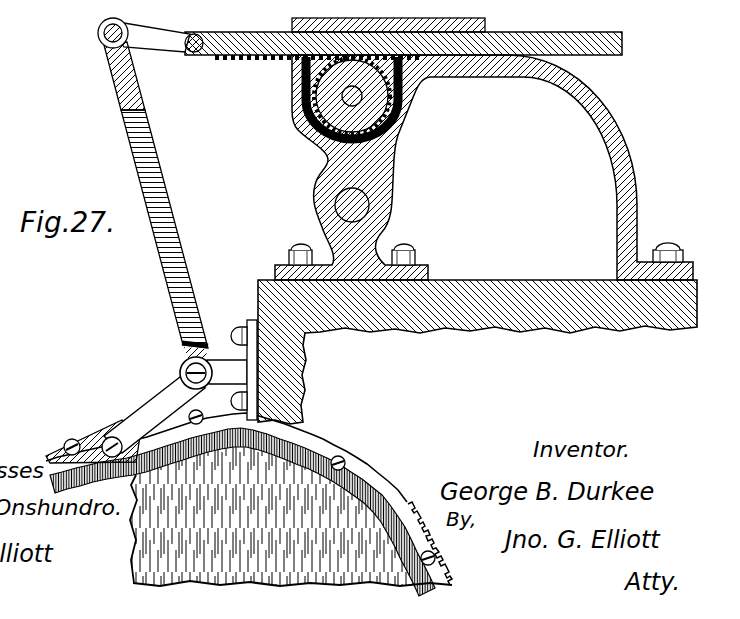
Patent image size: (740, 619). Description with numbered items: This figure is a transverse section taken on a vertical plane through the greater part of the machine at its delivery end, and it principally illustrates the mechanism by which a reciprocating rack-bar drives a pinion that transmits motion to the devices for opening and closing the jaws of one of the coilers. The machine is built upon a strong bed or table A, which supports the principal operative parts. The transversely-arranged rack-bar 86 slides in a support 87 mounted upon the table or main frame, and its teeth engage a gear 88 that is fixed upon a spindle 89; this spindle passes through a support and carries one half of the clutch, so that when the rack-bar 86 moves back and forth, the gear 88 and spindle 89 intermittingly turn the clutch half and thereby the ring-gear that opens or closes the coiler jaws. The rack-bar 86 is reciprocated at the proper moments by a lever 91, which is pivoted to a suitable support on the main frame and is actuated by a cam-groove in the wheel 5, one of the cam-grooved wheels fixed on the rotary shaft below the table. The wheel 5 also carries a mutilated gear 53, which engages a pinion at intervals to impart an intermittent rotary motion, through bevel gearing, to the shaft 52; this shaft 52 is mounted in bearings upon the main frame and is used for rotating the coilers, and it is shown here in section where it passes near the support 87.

The rack-bar 86 is at (422, 19).
The support 87 is at (484, 167).
The gear 88 is at (300, 107).
The spindle 89 is at (405, 110).
The shaft 52 is at (336, 208).
The lever 91 is at (153, 188).
The cam-grooved wheel 5 is at (261, 503).
The mutilated gear 53 is at (447, 563).
The bed or table A is at (477, 334).